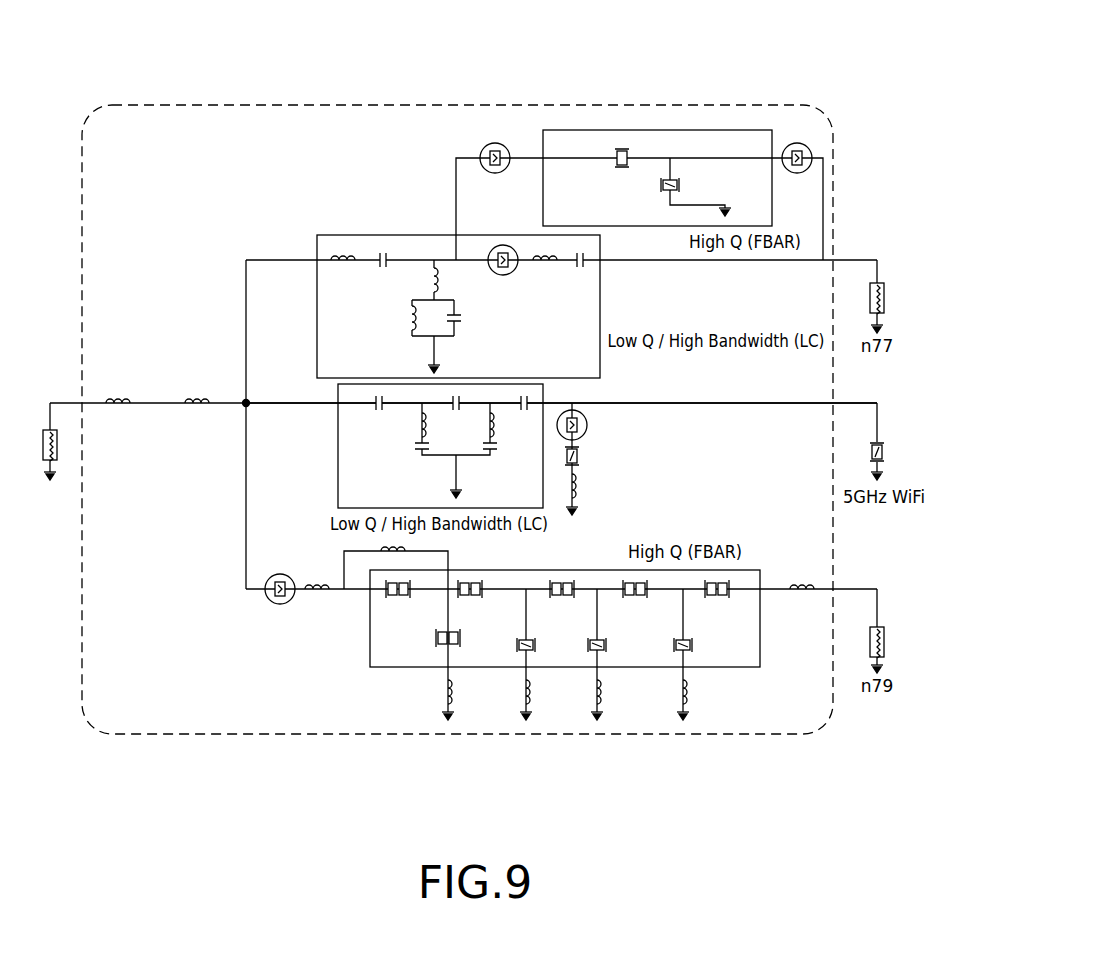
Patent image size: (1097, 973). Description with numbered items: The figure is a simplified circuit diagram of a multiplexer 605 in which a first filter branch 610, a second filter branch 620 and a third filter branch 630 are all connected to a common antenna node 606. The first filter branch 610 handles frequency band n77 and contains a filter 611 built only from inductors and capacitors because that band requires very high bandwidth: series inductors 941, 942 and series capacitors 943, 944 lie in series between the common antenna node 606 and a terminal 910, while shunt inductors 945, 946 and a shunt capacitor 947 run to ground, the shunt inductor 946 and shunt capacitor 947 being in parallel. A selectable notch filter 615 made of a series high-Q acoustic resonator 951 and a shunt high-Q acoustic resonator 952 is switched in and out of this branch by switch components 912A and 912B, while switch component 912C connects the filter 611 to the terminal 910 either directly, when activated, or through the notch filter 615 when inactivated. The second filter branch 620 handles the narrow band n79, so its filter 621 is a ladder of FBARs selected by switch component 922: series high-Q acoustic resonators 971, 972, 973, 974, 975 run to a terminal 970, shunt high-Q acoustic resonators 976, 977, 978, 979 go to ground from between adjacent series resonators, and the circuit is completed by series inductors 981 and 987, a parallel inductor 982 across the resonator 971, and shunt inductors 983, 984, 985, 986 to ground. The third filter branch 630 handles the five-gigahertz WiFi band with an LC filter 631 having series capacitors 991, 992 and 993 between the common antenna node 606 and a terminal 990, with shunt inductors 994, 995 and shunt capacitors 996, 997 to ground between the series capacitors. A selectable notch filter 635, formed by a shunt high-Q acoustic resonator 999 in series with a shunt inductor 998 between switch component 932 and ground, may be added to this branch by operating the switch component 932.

The multiplexer 605 is at (212, 104).
The common antenna node 606 is at (243, 407).
The first filter branch 610 is at (222, 252).
The filter 611 is at (345, 220).
The notch filter 615 is at (530, 130).
The second filter branch 620 is at (232, 584).
The filter 621 is at (778, 685).
The third filter branch 630 is at (222, 372).
The filter 631 is at (330, 392).
The notch filter 635 is at (630, 445).
The terminal 910 is at (882, 272).
The switch component 912A is at (480, 150).
The switch component 912B is at (806, 144).
The switch component 912C is at (515, 272).
The switch component 922 is at (275, 605).
The switch component 932 is at (586, 412).
The series inductor 941 is at (345, 270).
The series inductor 942 is at (545, 252).
The series capacitor 943 is at (385, 272).
The series capacitor 944 is at (588, 265).
The shunt inductor 945 is at (434, 255).
The shunt inductor 946 is at (410, 325).
The shunt capacitor 947 is at (462, 318).
The series high-Q acoustic resonator 951 is at (620, 170).
The shunt high-Q acoustic resonator 952 is at (682, 185).
The terminal 970 is at (886, 640).
The series high-Q acoustic resonator 971 is at (395, 600).
The series high-Q acoustic resonator 972 is at (470, 600).
The series high-Q acoustic resonator 973 is at (562, 600).
The series high-Q acoustic resonator 974 is at (635, 600).
The series high-Q acoustic resonator 975 is at (717, 600).
The shunt high-Q acoustic resonator 976 is at (436, 638).
The shunt high-Q acoustic resonator 977 is at (536, 648).
The shunt high-Q acoustic resonator 978 is at (607, 648).
The shunt high-Q acoustic resonator 979 is at (693, 648).
The series inductor 981 is at (312, 582).
The parallel inductor 982 is at (448, 551).
The shunt inductor 983 is at (444, 695).
The shunt inductor 984 is at (522, 695).
The shunt inductor 985 is at (593, 695).
The shunt inductor 986 is at (679, 695).
The series inductor 987 is at (802, 584).
The terminal 990 is at (886, 450).
The series capacitor 991 is at (375, 410).
The series capacitor 992 is at (458, 398).
The series capacitor 993 is at (524, 398).
The shunt inductor 994 is at (415, 422).
The shunt inductor 995 is at (484, 422).
The shunt capacitor 996 is at (417, 452).
The shunt capacitor 997 is at (495, 452).
The shunt inductor 998 is at (578, 490).
The shunt high-Q acoustic resonator 999 is at (582, 458).